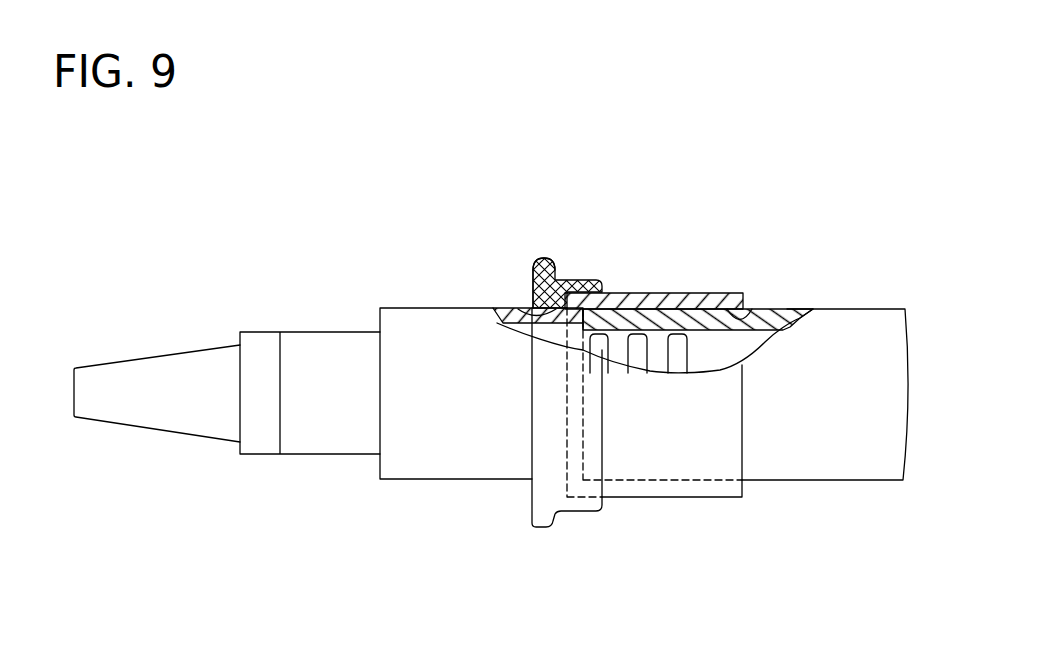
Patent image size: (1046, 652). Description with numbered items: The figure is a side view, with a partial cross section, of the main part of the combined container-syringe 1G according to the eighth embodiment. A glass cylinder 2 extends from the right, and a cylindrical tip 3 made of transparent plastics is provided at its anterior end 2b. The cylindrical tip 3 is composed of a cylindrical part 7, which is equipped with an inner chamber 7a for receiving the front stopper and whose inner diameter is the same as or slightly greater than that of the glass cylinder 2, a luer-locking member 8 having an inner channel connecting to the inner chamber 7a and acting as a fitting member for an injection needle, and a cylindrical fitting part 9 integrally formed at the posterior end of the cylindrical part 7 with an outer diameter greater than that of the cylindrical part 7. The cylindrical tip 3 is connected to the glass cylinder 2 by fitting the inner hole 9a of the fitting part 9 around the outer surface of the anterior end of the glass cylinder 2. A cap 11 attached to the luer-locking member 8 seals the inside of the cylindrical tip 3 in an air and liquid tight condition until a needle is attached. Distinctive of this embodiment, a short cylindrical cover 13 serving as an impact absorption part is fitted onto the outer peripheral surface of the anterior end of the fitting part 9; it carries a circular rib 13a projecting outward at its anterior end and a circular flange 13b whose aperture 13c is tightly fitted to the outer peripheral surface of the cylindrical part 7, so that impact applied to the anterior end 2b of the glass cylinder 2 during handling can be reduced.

The combined container-syringe 1G is at (752, 237).
The glass cylinder 2 is at (833, 308).
The anterior end 2b is at (563, 278).
The cylindrical tip 3 is at (467, 481).
The cylindrical part 7 is at (410, 308).
The inner chamber 7a is at (548, 335).
The luer-locking member 8 is at (323, 332).
The cylindrical fitting part 9 is at (690, 293).
The inner hole 9a is at (752, 310).
The cap 11 is at (197, 347).
The short cylindrical cover 13 is at (600, 278).
The circular rib 13a is at (537, 257).
The circular flange 13b is at (533, 292).
The aperture 13c is at (513, 306).